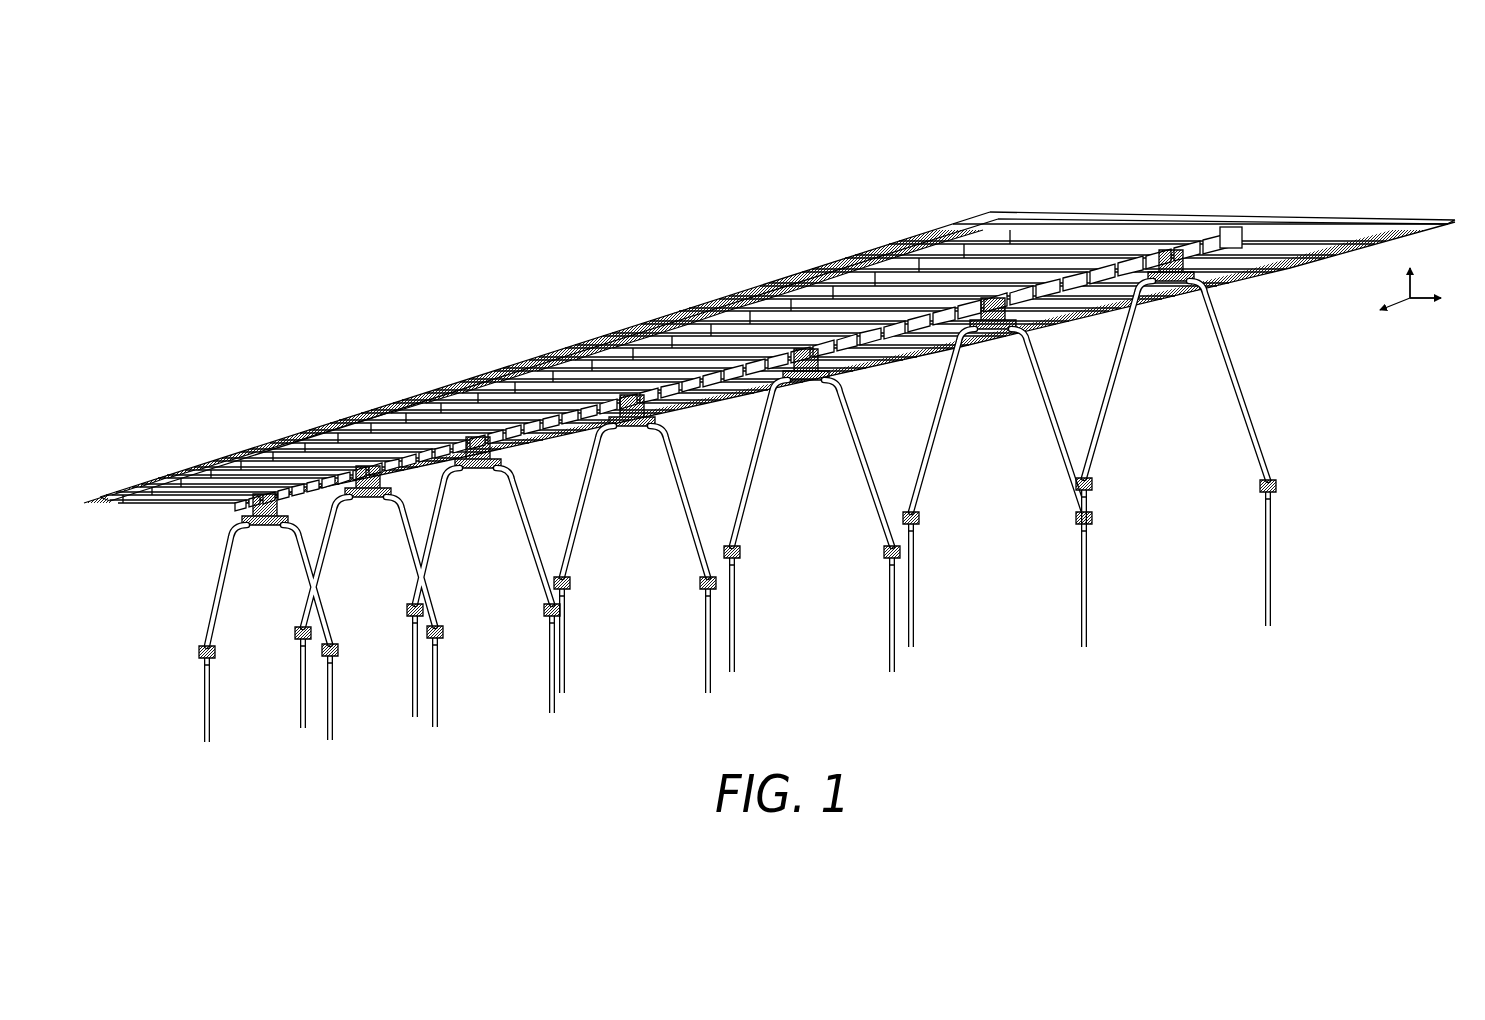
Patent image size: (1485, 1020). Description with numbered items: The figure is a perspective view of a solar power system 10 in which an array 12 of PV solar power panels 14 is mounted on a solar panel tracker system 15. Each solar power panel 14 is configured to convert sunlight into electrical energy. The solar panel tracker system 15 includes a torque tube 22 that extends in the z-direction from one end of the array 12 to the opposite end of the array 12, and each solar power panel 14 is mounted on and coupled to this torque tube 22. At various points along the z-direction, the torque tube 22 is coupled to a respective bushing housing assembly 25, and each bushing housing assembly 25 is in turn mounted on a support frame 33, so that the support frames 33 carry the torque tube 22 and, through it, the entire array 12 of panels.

The solar power system 10 is at (1324, 120).
The array 12 is at (1463, 212).
The PV solar power panel 14 is at (990, 222).
The solar panel tracker system 15 is at (1273, 368).
The torque tube 22 is at (1212, 242).
The bushing housing assembly 25 is at (1228, 281).
The support frame 33 is at (1273, 468).